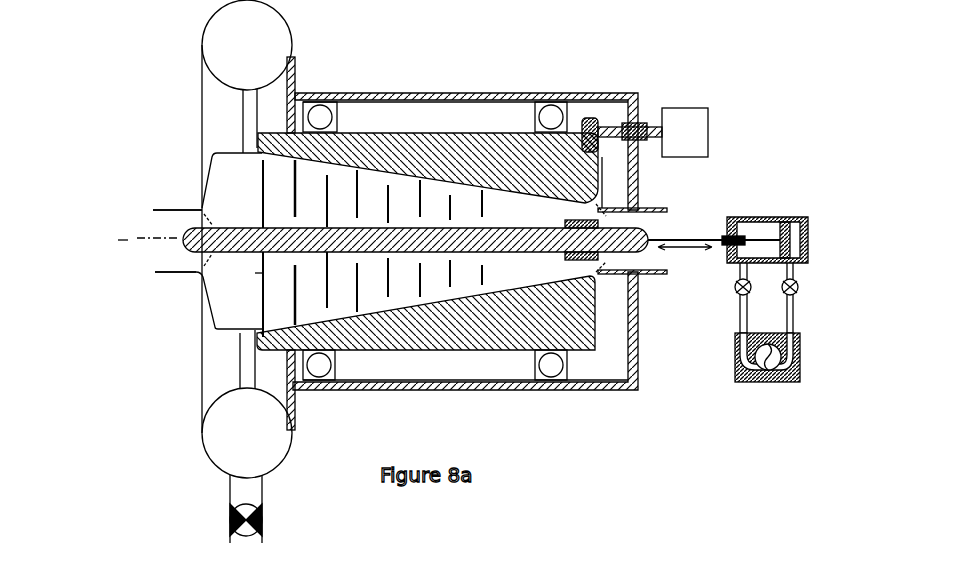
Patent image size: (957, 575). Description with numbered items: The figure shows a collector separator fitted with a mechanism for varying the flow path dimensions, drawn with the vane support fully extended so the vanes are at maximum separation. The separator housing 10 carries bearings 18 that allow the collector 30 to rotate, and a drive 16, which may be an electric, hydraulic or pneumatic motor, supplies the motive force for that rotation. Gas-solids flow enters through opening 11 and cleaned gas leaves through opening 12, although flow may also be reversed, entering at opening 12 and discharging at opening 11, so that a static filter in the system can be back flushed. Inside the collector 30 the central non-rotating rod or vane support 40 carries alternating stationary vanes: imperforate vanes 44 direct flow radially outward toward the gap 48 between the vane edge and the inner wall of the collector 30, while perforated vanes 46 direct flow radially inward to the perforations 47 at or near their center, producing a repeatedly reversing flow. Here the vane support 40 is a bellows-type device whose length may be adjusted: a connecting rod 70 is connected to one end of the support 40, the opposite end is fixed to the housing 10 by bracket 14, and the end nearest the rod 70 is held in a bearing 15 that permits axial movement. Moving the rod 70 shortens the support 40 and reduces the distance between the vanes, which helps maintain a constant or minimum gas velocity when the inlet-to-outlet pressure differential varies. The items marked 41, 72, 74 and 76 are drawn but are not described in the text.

The separator housing 10 is at (380, 93).
The opening 11 is at (162, 227).
The opening 12 is at (645, 227).
The bracket 14 is at (202, 208).
The bearing 15 is at (595, 256).
The drive 16 is at (682, 128).
The bearings 18 is at (538, 102).
The collector 30 is at (593, 335).
The vane support 40 is at (187, 250).
The shaft axis / centerline 41 is at (177, 242).
The imperforate vane 44 is at (263, 272).
The perforated vane 46 is at (295, 302).
The perforations 47 is at (297, 258).
The gap 48 is at (390, 302).
The connecting rod 70 is at (700, 228).
The hydraulic cylinder 72 is at (808, 222).
The valves 74 is at (750, 290).
The pump 76 is at (800, 363).